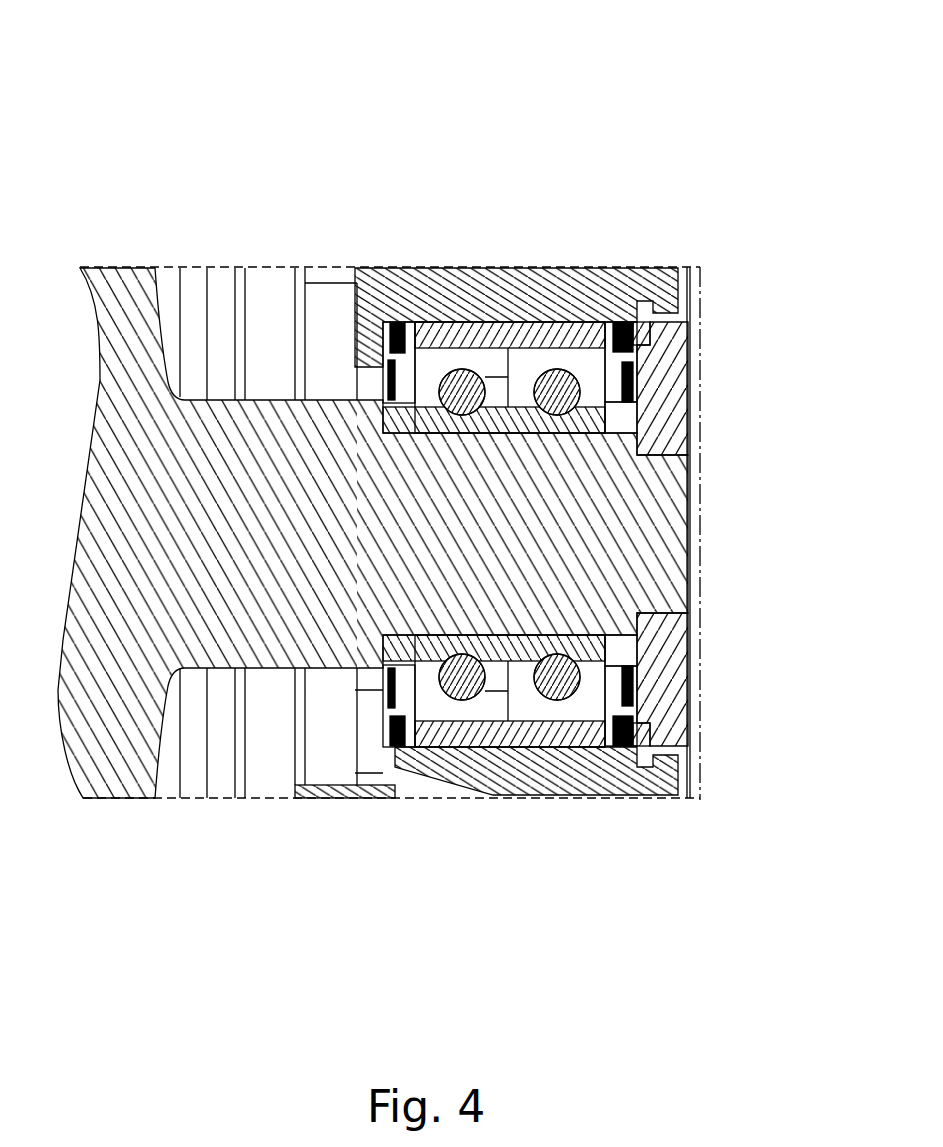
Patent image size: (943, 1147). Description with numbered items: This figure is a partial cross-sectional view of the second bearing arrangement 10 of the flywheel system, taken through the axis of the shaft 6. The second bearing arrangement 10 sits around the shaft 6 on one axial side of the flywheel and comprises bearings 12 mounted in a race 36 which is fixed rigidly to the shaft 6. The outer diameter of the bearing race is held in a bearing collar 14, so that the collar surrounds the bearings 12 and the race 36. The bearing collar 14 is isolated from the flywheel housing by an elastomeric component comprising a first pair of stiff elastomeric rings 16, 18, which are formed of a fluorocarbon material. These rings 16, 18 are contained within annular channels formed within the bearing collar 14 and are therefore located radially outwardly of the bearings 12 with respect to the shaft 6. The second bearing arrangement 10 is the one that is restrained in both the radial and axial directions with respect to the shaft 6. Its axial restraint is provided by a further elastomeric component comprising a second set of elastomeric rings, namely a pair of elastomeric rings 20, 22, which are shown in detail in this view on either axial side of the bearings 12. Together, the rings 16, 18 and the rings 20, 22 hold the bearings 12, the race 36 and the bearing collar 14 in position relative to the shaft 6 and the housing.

The shaft 6 is at (690, 495).
The second bearing arrangement 10 is at (175, 177).
The bearings 12 is at (555, 677).
The bearing collar 14 is at (508, 300).
The first stiff elastomeric ring 16 is at (452, 322).
The second stiff elastomeric ring 18 is at (575, 320).
The elastomeric ring 20 is at (640, 343).
The elastomeric ring 22 is at (396, 322).
The race 36 is at (625, 428).